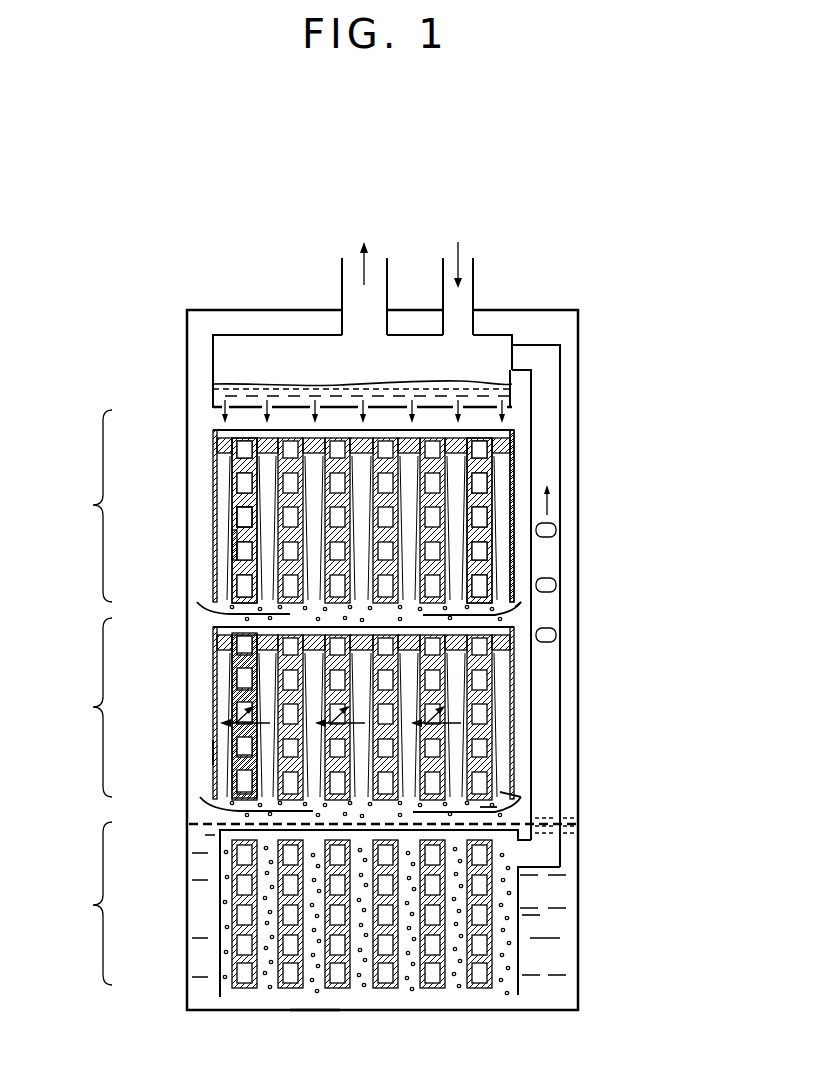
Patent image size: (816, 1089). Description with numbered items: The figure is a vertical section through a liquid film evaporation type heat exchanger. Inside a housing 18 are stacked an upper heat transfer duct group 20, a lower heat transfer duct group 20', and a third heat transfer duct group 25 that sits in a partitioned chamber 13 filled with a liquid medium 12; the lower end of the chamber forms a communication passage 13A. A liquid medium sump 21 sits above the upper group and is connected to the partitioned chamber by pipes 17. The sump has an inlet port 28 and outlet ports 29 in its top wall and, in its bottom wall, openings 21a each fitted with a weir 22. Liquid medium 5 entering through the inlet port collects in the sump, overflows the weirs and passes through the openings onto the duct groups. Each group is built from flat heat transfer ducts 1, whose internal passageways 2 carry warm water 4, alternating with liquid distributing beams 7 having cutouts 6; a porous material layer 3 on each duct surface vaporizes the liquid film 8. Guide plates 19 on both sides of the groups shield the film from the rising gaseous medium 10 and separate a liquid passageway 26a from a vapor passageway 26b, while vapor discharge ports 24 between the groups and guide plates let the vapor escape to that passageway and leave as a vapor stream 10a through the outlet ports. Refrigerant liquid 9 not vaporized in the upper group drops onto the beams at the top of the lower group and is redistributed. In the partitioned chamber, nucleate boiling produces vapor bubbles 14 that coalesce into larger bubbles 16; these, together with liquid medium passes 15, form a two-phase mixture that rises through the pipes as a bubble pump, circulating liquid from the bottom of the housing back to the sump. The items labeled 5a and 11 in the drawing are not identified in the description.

The heat transfer duct 1 is at (241, 468).
The passageways 2 is at (243, 516).
The porous material layer 3 is at (235, 557).
The warm water 4 is at (238, 722).
The liquid medium 5 is at (460, 251).
The supplied liquid 5a is at (213, 388).
The cutouts 6 is at (240, 643).
The liquid distributing beams 7 is at (236, 628).
The liquid film 8 is at (497, 472).
The refrigerant liquid 9 is at (233, 817).
The gaseous medium 10 is at (503, 612).
The vapor stream 10a is at (364, 263).
The liquid layer 11 is at (331, 393).
The liquid medium 12 is at (559, 906).
The partitioned chamber 13 is at (221, 910).
The communication passage 13A is at (313, 1001).
The vapor bubbles 14 is at (513, 867).
The liquid medium passes 15 is at (550, 560).
The bubbles 16 is at (556, 530).
The pipes 17 is at (560, 405).
The housing 18 is at (567, 309).
The guide plates 19 is at (517, 550).
The heat transfer duct group 20 is at (339, 524).
The heat transfer duct group 20' is at (339, 721).
The liquid medium sump 21 is at (262, 335).
The openings 21a is at (268, 407).
The weir 22 is at (264, 410).
The vapor discharge ports 24 is at (500, 792).
The heat transfer duct group 25 is at (339, 940).
The liquid passageway 26a is at (553, 657).
The vapor passageway 26b is at (565, 575).
The inlet port 28 is at (473, 284).
The outlet ports 29 is at (388, 289).